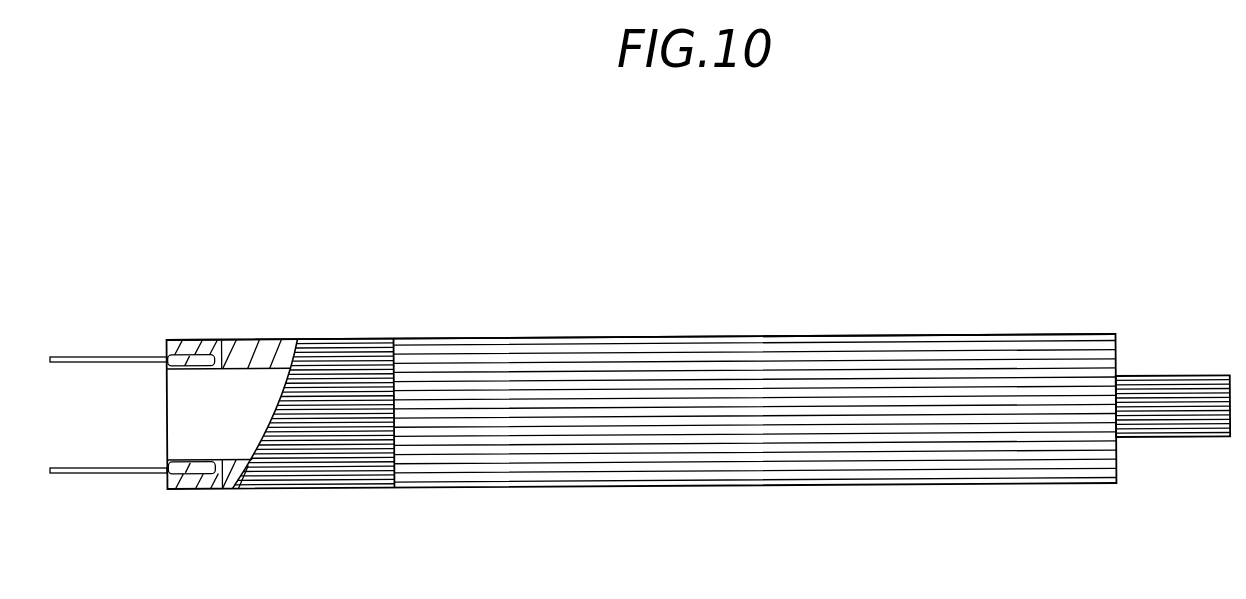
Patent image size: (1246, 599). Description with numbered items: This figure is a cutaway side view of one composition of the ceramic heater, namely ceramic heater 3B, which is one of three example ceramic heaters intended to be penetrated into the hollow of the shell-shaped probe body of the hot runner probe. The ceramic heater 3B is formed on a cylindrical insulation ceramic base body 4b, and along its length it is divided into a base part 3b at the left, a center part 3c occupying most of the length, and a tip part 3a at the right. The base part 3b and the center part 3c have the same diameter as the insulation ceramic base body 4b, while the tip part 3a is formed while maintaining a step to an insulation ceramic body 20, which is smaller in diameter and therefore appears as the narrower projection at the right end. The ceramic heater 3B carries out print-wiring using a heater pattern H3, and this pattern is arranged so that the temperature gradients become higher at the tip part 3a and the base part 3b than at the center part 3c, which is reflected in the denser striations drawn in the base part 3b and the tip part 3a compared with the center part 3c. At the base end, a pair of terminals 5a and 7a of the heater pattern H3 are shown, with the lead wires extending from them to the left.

The ceramic heater 3B is at (1042, 320).
The base part 3b is at (345, 340).
The center part 3c is at (600, 338).
The tip part 3a is at (1183, 437).
The insulation ceramic body 20 is at (1163, 385).
The cylindrical insulation ceramic base body 4b is at (843, 338).
The heater pattern H3 is at (963, 338).
The terminal 5a is at (197, 341).
The terminal 7a is at (195, 489).